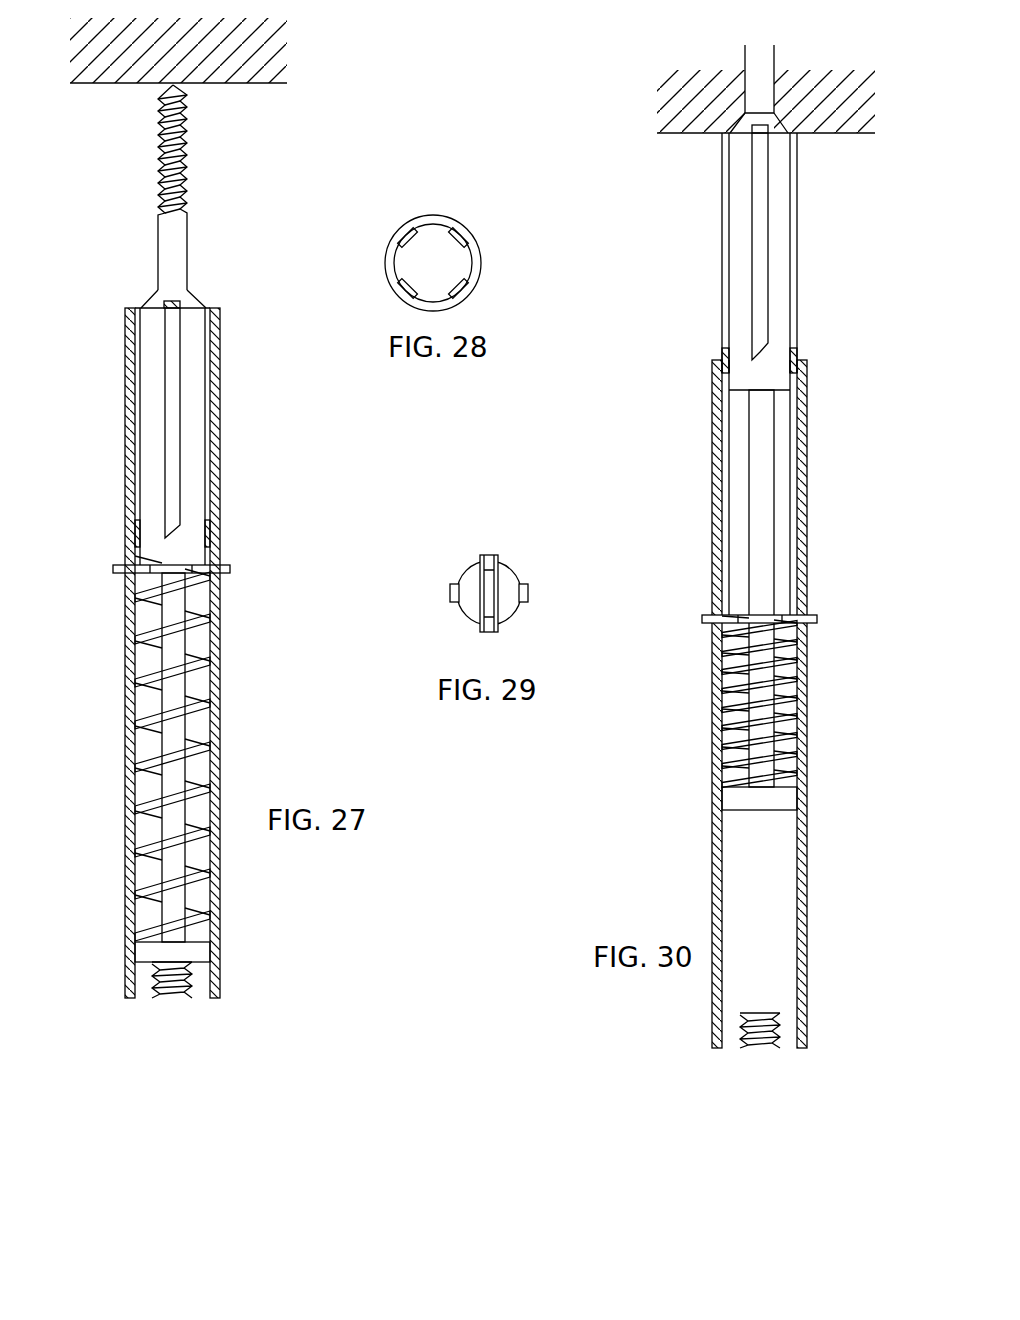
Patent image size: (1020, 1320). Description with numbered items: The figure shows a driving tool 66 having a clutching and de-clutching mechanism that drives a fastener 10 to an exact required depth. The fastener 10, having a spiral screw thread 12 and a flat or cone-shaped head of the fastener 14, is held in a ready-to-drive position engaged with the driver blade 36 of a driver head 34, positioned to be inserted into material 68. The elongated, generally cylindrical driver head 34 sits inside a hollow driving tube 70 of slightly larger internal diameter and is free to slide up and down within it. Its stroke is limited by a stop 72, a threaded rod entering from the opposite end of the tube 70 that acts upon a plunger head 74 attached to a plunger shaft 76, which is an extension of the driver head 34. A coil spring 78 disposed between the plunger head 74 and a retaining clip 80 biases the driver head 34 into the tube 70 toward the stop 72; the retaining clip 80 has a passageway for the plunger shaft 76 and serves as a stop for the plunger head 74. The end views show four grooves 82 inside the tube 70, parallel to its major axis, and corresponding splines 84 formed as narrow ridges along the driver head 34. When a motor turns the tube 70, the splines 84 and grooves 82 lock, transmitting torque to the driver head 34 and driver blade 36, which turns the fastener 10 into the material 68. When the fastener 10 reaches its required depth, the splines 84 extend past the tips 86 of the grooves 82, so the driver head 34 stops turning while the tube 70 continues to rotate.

In FIG. 27, the fastener 10 is at (130, 211).
In FIG. 27, the spiral screw thread 12 is at (188, 178).
In FIG. 30, the spiral screw thread 12 is at (759, 79).
In FIG. 27, the head of the fastener 14 is at (197, 297).
In FIG. 30, the head of the fastener 14 is at (787, 127).
In FIG. 27, the driver head 34 is at (192, 397).
In FIG. 29, the driver head 34 is at (472, 577).
In FIG. 30, the driver head 34 is at (780, 232).
In FIG. 27, the driver blade 36 is at (172, 303).
In FIG. 29, the driver blade 36 is at (488, 592).
In FIG. 30, the driver blade 36 is at (757, 127).
In FIG. 27, the driving tool 66 is at (87, 565).
In FIG. 30, the driving tool 66 is at (865, 565).
In FIG. 27, the material 68 is at (253, 77).
In FIG. 30, the material 68 is at (702, 128).
In FIG. 27, the hollow driving tube 70 is at (218, 423).
In FIG. 28, the hollow driving tube 70 is at (473, 277).
In FIG. 30, the hollow driving tube 70 is at (713, 657).
In FIG. 27, the stop 72 is at (182, 975).
In FIG. 30, the stop 72 is at (747, 1023).
In FIG. 27, the plunger head 74 is at (193, 950).
In FIG. 30, the plunger head 74 is at (778, 800).
In FIG. 27, the plunger shaft 76 is at (172, 652).
In FIG. 30, the plunger shaft 76 is at (763, 545).
In FIG. 27, the coil spring 78 is at (210, 723).
In FIG. 30, the coil spring 78 is at (778, 703).
In FIG. 27, the retaining clip 80 is at (222, 575).
In FIG. 30, the retaining clip 80 is at (810, 623).
In FIG. 27, the grooves 82 is at (137, 373).
In FIG. 28, the grooves 82 is at (433, 230).
In FIG. 30, the grooves 82 is at (723, 405).
In FIG. 27, the splines 84 is at (172, 377).
In FIG. 29, the splines 84 is at (487, 555).
In FIG. 30, the splines 84 is at (760, 210).
In FIG. 30, the tips of the grooves 86 is at (763, 357).